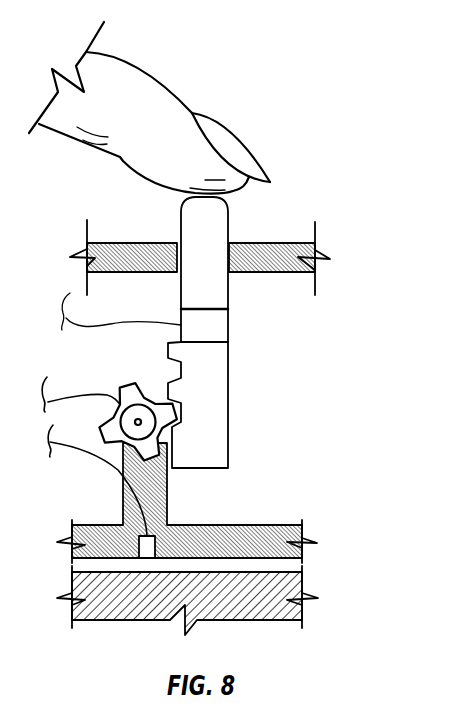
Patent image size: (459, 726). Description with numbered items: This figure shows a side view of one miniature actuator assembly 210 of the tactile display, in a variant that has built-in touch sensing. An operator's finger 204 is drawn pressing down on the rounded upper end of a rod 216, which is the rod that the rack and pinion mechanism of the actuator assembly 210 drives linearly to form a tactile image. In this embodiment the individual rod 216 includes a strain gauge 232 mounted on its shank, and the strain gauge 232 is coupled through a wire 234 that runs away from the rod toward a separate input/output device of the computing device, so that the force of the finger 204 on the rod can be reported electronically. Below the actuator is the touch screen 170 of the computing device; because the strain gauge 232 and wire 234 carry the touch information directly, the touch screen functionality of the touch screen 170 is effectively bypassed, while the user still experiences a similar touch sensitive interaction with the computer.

The finger 204 is at (163, 102).
The miniature actuator assembly 210 is at (324, 133).
The rod 216 is at (223, 285).
The strain gauge 232 is at (218, 325).
The wire 234 is at (88, 323).
The touch screen 170 is at (290, 572).